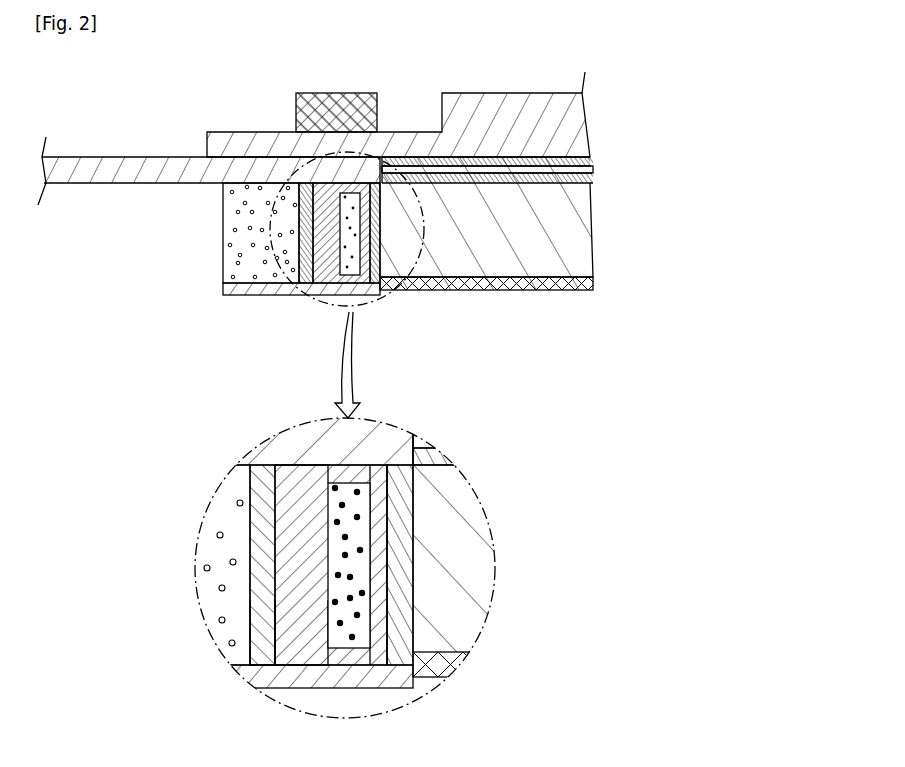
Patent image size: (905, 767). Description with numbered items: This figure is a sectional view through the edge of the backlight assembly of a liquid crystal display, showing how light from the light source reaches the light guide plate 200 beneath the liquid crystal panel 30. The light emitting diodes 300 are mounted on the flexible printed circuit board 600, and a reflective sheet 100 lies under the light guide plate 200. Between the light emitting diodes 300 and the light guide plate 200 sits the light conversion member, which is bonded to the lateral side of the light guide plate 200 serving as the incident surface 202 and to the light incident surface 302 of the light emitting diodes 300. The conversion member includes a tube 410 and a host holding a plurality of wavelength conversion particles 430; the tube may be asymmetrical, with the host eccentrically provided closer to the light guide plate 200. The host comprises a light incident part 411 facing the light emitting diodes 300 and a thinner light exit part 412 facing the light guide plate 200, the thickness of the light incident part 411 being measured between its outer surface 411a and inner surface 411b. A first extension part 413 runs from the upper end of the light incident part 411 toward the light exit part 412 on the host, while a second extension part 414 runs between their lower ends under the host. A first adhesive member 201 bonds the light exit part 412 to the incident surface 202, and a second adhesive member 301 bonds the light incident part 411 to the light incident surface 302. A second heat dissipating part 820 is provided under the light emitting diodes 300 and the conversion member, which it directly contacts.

The liquid crystal panel 30 is at (508, 108).
The reflective sheet 100 is at (525, 291).
The light guide plate 200 is at (457, 252).
The first adhesive member 201 is at (397, 293).
The incident surface 202 is at (435, 456).
The light emitting diodes 300 is at (226, 198).
The second adhesive member 301 is at (305, 240).
The light incident surface 302 is at (258, 630).
The tube 410 is at (350, 128).
The light incident part 411 is at (290, 520).
The outer surface of the light incident part 411a is at (280, 625).
The inner surface of the light incident part 411b is at (330, 470).
The light exit part 412 is at (393, 515).
The first extension part 413 is at (376, 470).
The second extension part 414 is at (342, 302).
The wavelength conversion particles 430 is at (350, 640).
The flexible printed circuit board 600 is at (149, 168).
The second heat dissipating part 820 is at (230, 291).